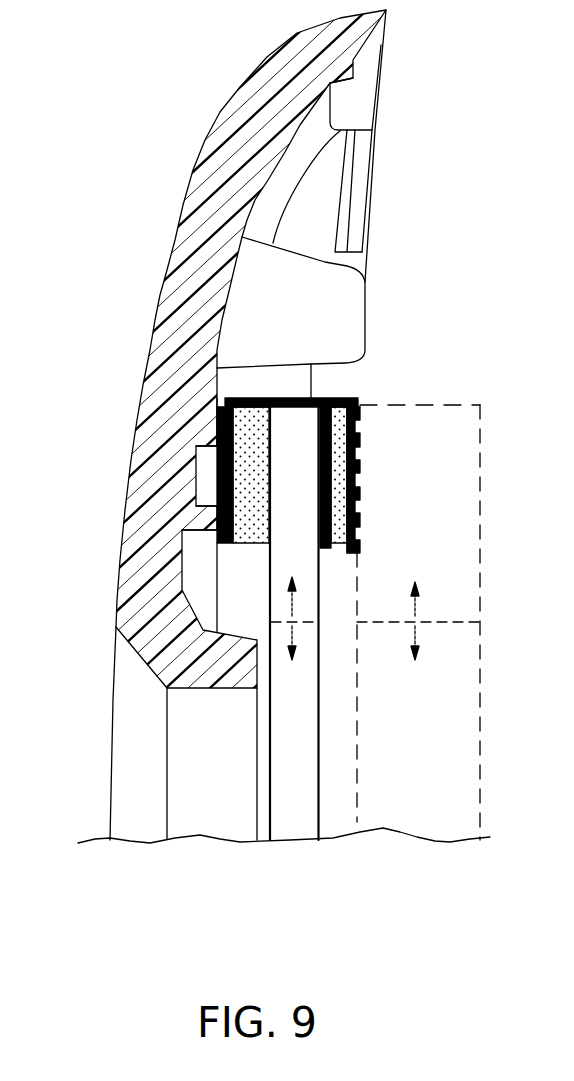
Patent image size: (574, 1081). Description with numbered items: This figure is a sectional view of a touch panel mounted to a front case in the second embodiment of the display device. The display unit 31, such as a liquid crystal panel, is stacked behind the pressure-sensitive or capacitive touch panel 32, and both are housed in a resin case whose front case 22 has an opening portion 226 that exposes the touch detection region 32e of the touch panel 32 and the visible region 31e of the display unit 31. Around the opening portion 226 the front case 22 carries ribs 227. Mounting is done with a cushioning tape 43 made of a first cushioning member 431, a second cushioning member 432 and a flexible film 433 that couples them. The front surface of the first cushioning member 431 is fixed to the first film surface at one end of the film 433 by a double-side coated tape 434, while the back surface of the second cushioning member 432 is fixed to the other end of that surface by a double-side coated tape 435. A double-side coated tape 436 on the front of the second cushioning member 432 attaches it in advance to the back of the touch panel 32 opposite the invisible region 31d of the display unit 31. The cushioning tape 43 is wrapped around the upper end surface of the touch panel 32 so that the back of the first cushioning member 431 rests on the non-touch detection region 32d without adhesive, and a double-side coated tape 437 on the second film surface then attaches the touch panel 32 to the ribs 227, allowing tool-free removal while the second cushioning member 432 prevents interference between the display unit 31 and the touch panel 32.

The front case 22 is at (190, 213).
The cushioning tape 43 is at (271, 434).
The first cushioning member 431 is at (252, 407).
The second cushioning member 432 is at (342, 398).
The film 433 is at (218, 417).
The double-side coated tape 434 is at (234, 398).
The double-side coated tape 435 is at (357, 400).
The double-side coated tape 436 is at (328, 398).
The double-side coated tape 437 is at (212, 420).
The ribs 227 is at (195, 522).
The opening portion 226 is at (193, 787).
The touch panel 32 is at (294, 661).
The display unit 31 is at (418, 660).
The non-touch detection region 32d is at (294, 587).
The touch detection region 32e is at (295, 659).
The invisible region 31d is at (418, 588).
The visible region 31e is at (415, 660).